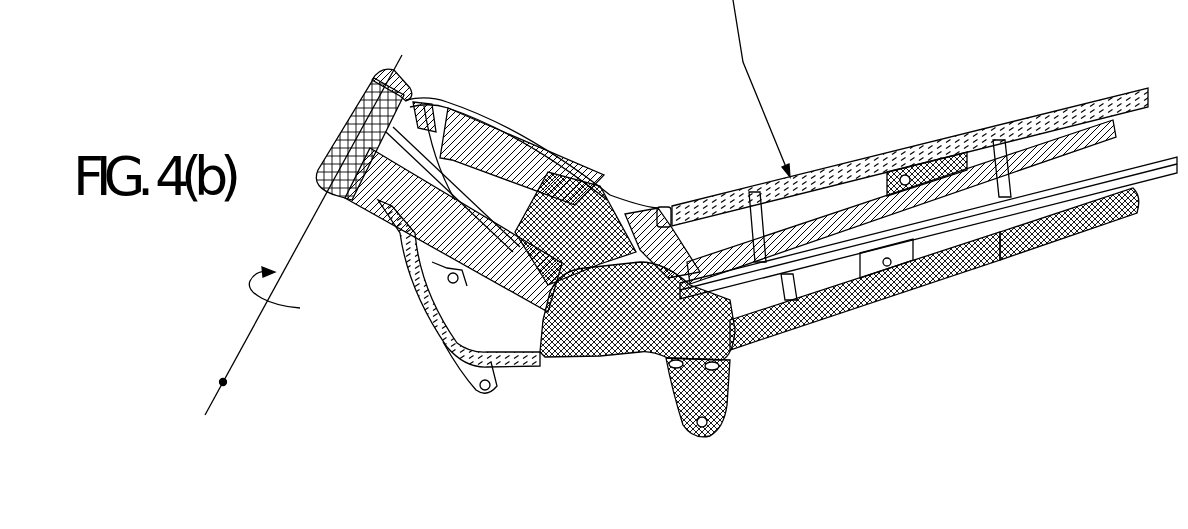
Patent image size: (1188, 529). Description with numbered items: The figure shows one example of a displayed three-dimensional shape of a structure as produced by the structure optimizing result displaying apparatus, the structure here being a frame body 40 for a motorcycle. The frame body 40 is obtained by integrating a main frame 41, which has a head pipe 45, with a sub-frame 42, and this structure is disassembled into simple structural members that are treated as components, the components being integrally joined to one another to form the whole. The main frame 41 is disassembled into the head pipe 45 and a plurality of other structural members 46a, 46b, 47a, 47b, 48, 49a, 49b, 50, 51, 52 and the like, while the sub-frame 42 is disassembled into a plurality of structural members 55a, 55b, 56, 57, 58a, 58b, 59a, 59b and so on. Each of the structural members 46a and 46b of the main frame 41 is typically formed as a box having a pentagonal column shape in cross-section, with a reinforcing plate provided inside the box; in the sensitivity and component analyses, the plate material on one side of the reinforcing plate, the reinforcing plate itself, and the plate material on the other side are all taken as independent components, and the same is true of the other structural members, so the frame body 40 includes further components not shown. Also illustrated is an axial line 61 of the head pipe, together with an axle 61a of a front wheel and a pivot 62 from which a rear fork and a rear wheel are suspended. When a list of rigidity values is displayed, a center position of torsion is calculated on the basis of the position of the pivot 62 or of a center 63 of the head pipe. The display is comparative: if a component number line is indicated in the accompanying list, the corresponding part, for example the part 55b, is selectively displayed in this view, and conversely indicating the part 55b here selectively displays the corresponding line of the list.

The frame body 40 is at (650, 95).
The main frame 41 is at (410, 330).
The sub-frame 42 is at (806, 344).
The head pipe 45 is at (383, 82).
The structural member 46a is at (404, 265).
The structural member 46b is at (487, 130).
The structural member 47a is at (490, 393).
The structural member 47b is at (458, 283).
The structural member 48 is at (437, 133).
The structural member 49a is at (658, 360).
The structural member 49b is at (580, 200).
The structural member 50 is at (643, 200).
The structural member 51 is at (590, 358).
The structural member 52 is at (658, 207).
The structural member 55a is at (823, 262).
The structural member 55b is at (830, 173).
The structural member 56 is at (757, 215).
The structural member 57 is at (1010, 178).
The structural member 58a is at (907, 263).
The structural member 58b is at (890, 170).
The structural member 59a is at (993, 247).
The structural member 59b is at (1020, 150).
The axial line of the head pipe 61 is at (293, 300).
The axle of a front wheel 61a is at (223, 382).
The pivot 62 is at (708, 422).
The center of the head pipe 63 is at (358, 137).